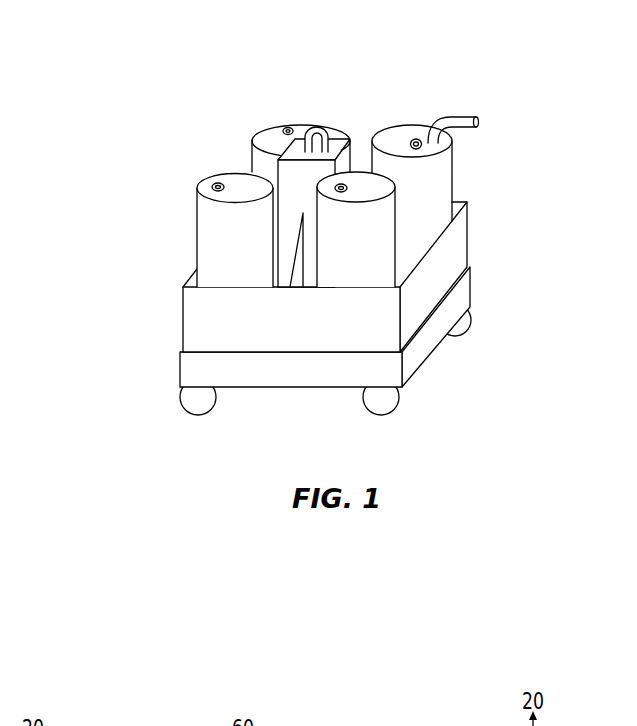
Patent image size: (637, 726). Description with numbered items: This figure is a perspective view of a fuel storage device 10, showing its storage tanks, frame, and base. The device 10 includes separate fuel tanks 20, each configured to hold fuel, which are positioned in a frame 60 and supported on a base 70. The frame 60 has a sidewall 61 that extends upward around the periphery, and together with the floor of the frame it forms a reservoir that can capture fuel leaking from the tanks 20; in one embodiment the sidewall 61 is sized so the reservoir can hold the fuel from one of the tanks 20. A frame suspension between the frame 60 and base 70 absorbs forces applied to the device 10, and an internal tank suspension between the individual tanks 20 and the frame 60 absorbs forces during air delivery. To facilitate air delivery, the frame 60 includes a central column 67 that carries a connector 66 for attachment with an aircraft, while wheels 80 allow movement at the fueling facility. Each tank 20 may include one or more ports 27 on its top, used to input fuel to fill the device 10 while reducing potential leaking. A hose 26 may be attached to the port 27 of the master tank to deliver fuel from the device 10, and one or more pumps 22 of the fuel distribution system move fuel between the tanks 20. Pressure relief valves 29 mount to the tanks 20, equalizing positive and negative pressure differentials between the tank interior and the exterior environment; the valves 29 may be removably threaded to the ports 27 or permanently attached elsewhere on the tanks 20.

The fuel storage device 10 is at (100, 152).
The fuel tanks 20 is at (238, 182).
The pumps 22 is at (428, 137).
The hose 26 is at (457, 120).
The ports 27 is at (219, 189).
The pressure relief valves 29 is at (221, 185).
The frame 60 is at (181, 316).
The sidewall 61 is at (468, 240).
The connector 66 is at (318, 125).
The central column 67 is at (340, 139).
The base 70 is at (470, 283).
The wheels 80 is at (182, 410).